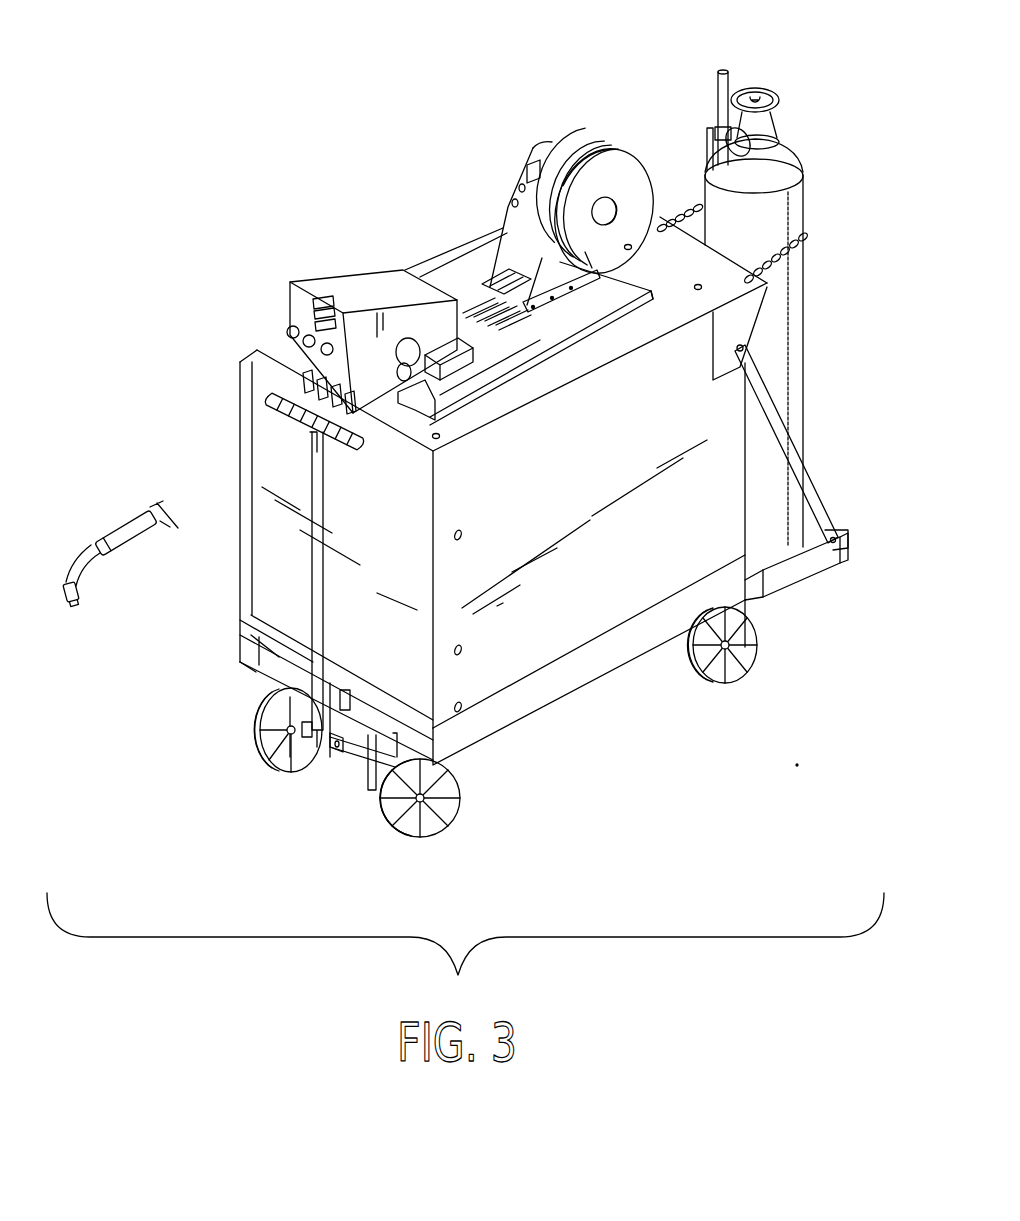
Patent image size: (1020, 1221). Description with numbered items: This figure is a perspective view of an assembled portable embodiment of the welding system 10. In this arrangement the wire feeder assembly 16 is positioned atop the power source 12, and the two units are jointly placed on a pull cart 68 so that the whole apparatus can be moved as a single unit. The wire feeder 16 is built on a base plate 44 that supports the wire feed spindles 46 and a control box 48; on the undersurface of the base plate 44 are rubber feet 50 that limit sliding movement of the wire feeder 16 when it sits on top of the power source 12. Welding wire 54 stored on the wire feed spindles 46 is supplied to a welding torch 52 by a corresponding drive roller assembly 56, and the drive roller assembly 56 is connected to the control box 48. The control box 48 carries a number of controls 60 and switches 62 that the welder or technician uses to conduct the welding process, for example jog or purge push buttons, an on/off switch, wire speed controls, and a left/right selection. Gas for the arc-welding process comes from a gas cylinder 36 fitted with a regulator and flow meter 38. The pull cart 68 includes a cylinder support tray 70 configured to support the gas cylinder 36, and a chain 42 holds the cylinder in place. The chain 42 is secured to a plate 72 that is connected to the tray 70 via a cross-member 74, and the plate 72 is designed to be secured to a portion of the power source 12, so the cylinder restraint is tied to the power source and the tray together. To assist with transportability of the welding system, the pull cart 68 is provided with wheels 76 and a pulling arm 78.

The welding system 10 is at (316, 78).
The power source 12 is at (595, 564).
The wire feeder assembly 16 is at (501, 358).
The gas cylinder 36 is at (768, 215).
The regulator and flow meter 38 is at (746, 71).
The chain 42 is at (803, 234).
The base plate 44 is at (567, 320).
The wire feed spindles 46 is at (611, 128).
The control box 48 is at (402, 268).
The rubber feet 50 is at (655, 303).
The welding torch 52 is at (110, 547).
The welding wire 54 is at (618, 135).
The drive roller assembly 56 is at (427, 410).
The controls 60 is at (306, 398).
The switches 62 is at (290, 330).
The pull cart 68 is at (238, 659).
The cylinder support tray 70 is at (802, 570).
The plate 72 is at (757, 308).
The cross-member 74 is at (795, 455).
The wheels 76 is at (745, 682).
The pulling arm 78 is at (316, 602).